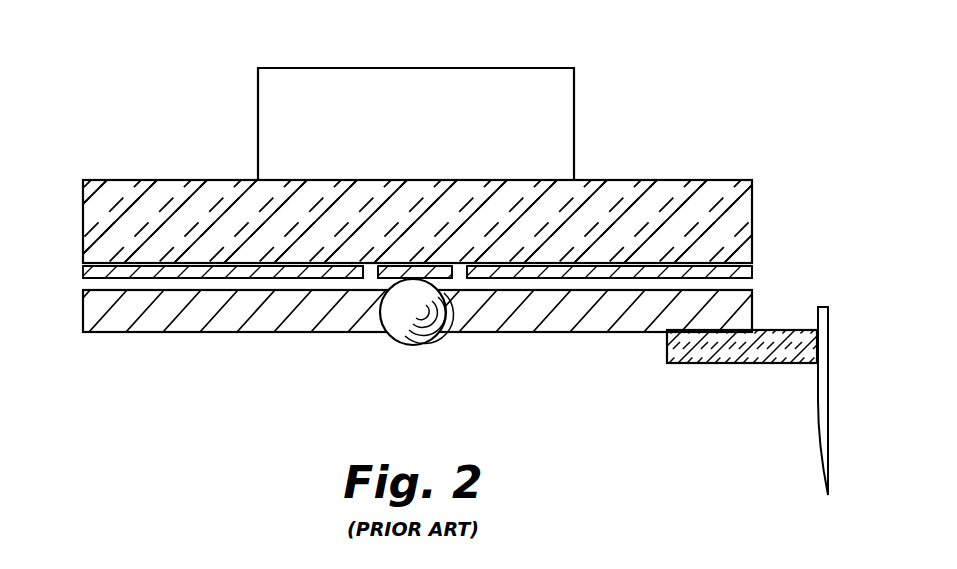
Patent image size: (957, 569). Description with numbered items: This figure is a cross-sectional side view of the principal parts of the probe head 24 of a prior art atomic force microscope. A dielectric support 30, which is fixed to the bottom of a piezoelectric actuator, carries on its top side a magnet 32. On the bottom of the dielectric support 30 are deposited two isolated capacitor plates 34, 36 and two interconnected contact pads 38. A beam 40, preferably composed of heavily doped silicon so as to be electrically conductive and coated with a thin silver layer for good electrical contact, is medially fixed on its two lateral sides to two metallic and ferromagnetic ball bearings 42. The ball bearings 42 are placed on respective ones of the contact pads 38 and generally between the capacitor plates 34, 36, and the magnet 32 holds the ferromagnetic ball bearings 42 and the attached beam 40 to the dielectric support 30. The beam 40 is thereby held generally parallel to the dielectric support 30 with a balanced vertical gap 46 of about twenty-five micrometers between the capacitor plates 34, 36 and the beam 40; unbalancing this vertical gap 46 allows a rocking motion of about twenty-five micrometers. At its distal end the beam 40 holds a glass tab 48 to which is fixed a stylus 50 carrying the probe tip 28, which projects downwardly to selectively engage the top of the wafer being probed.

The probe head 24 is at (146, 387).
The probe tip 28 is at (829, 461).
The dielectric support 30 is at (683, 180).
The magnet 32 is at (407, 68).
The capacitor plate 34 is at (83, 272).
The capacitor plate 36 is at (754, 272).
The contact pad 38 is at (413, 263).
The beam 40 is at (292, 318).
The ball bearing 42 is at (414, 346).
The vertical gap 46 is at (90, 284).
The glass tab 48 is at (716, 363).
The stylus 50 is at (829, 388).